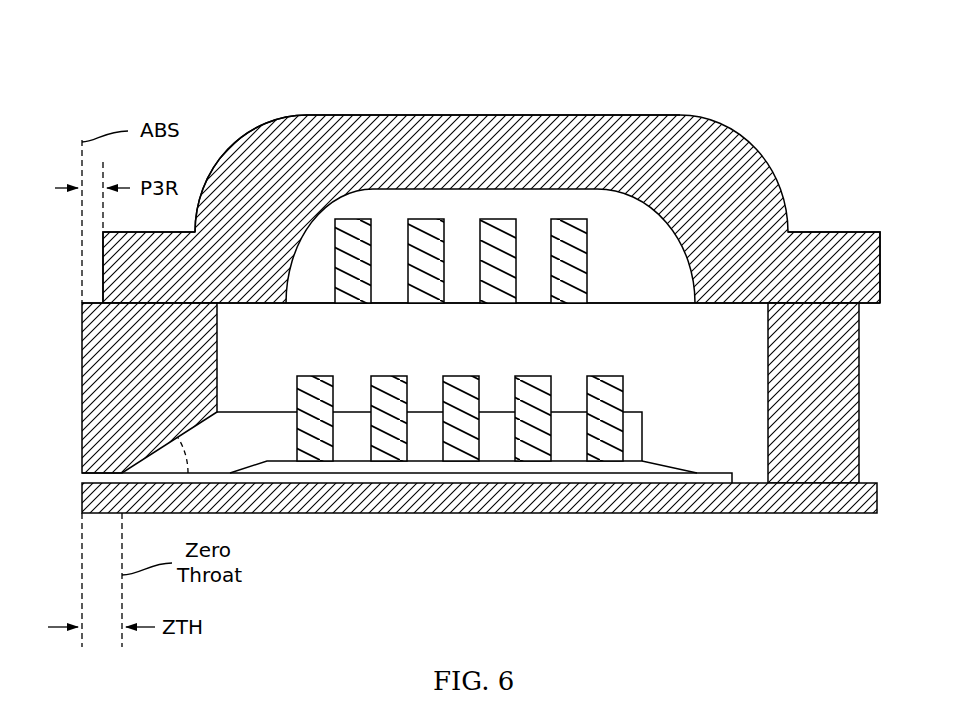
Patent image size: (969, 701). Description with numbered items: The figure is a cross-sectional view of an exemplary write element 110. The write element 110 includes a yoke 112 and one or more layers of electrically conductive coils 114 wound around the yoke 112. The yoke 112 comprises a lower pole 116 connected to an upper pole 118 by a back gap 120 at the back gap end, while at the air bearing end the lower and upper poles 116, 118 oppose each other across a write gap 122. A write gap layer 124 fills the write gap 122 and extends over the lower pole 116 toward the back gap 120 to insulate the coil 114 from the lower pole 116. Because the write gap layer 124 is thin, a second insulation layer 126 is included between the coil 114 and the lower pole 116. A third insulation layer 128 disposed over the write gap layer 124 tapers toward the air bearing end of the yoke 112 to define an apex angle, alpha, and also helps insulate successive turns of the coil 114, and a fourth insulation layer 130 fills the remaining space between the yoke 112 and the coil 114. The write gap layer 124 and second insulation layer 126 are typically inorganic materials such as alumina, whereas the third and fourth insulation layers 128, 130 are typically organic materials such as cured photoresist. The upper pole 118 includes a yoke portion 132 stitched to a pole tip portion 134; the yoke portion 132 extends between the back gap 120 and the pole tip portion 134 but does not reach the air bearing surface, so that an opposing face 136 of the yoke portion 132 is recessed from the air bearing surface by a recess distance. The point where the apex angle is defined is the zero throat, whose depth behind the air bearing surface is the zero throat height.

The write element 110 is at (559, 79).
The yoke 112 is at (817, 209).
The electrically conductive coils 114 is at (596, 263).
The lower pole 116 is at (655, 513).
The upper pole 118 is at (750, 146).
The back gap 120 is at (860, 392).
The write gap 122 is at (79, 478).
The write gap layer 124 is at (703, 473).
The second insulation layer 126 is at (652, 461).
The third insulation layer 128 is at (256, 448).
The fourth insulation layer 130 is at (472, 216).
The yoke portion 132 is at (224, 162).
The pole tip portion 134 is at (82, 387).
The opposing face 136 is at (100, 270).